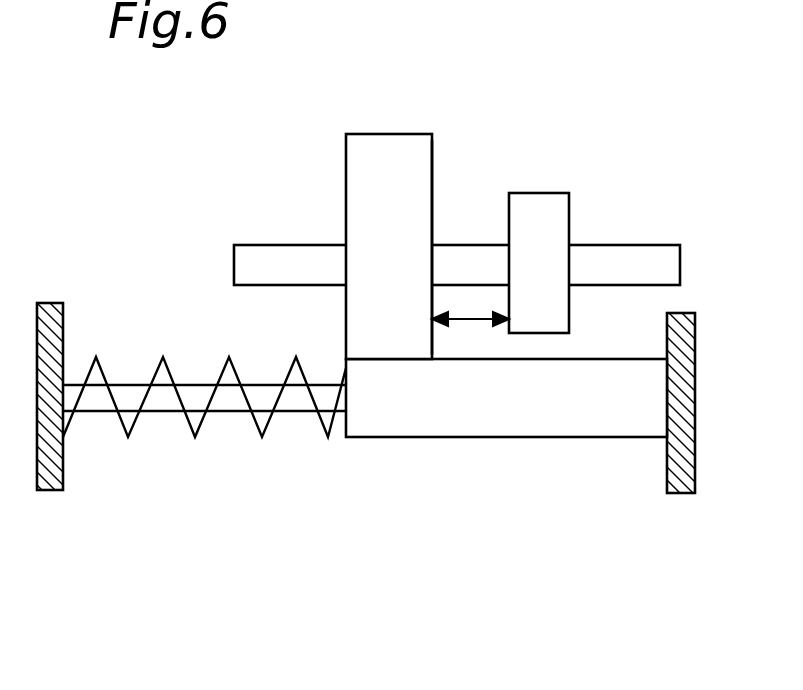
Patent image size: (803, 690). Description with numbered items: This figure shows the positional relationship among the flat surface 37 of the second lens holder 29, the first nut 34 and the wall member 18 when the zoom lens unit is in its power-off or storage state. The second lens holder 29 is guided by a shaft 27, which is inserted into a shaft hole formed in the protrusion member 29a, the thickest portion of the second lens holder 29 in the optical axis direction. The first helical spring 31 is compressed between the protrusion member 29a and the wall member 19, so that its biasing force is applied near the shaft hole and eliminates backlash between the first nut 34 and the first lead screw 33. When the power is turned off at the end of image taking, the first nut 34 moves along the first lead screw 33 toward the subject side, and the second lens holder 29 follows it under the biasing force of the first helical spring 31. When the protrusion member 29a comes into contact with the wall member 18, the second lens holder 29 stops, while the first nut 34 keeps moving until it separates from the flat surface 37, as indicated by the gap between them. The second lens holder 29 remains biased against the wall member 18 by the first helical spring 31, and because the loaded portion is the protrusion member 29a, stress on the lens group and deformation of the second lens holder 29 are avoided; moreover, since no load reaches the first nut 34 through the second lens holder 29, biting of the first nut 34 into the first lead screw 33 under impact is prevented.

The wall member 18 is at (667, 480).
The wall member 19 is at (60, 324).
The shaft 27 is at (192, 383).
The second lens holder 29 is at (387, 134).
The protrusion member 29a is at (457, 438).
The first helical spring 31 is at (260, 437).
The first lead screw 33 is at (623, 246).
The first nut 34 is at (545, 193).
The flat surface 37 is at (432, 178).